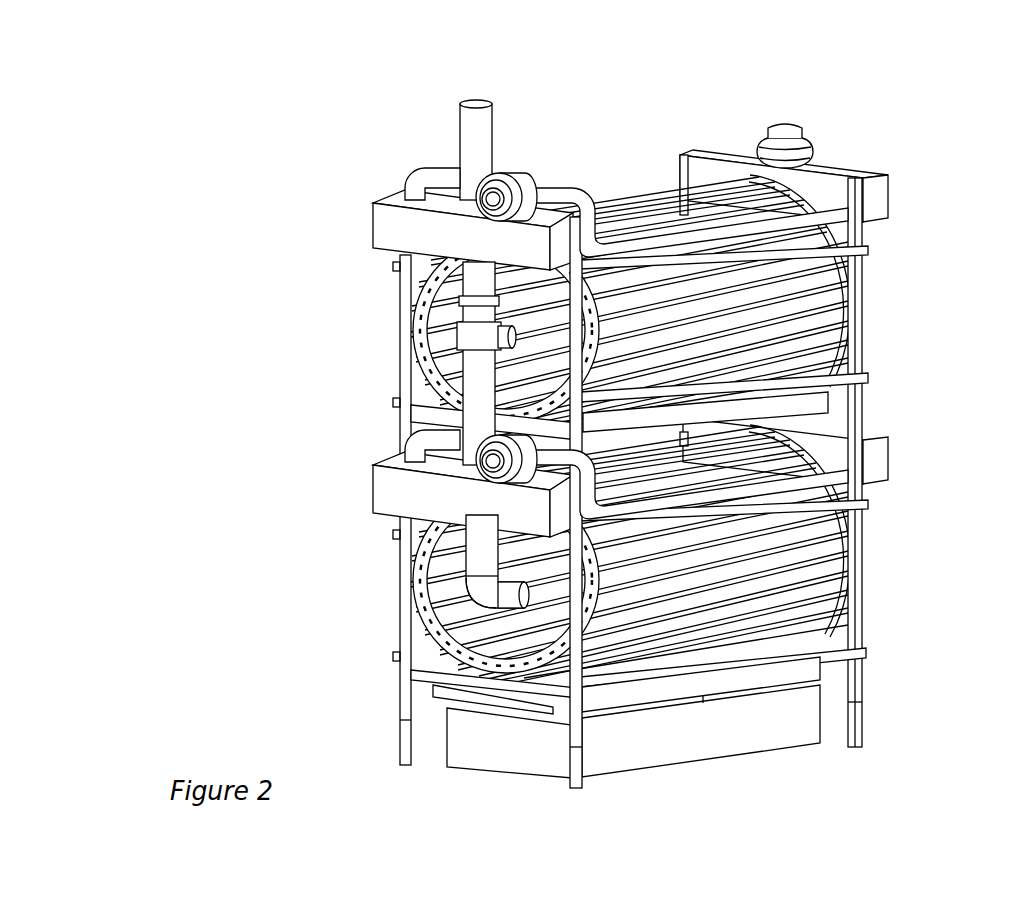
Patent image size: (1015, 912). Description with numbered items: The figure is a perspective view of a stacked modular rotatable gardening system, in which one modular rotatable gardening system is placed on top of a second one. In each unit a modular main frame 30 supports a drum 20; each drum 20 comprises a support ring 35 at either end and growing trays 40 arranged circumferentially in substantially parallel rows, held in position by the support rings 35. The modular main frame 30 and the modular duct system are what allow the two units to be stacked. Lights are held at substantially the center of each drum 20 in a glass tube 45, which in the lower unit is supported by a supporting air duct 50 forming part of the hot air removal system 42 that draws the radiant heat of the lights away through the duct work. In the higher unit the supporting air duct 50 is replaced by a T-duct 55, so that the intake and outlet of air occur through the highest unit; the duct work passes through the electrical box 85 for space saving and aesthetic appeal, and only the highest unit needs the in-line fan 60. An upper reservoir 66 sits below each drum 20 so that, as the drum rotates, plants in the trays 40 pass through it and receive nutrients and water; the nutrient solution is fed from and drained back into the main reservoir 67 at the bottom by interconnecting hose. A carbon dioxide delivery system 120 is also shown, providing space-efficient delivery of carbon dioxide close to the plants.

The drum 20 is at (647, 157).
The main frame 30 is at (380, 298).
The support ring 35 is at (416, 373).
The growing trays 40 is at (835, 307).
The hot air removal system 42 is at (432, 130).
The glass tube 45 is at (533, 596).
The supporting air duct 50 is at (477, 595).
The T-duct 55 is at (480, 341).
The in-line fan 60 is at (808, 142).
The upper reservoir 66 is at (822, 403).
The main reservoir 67 is at (765, 733).
The electrical box 85 is at (882, 207).
The carbon dioxide delivery system 120 is at (535, 158).